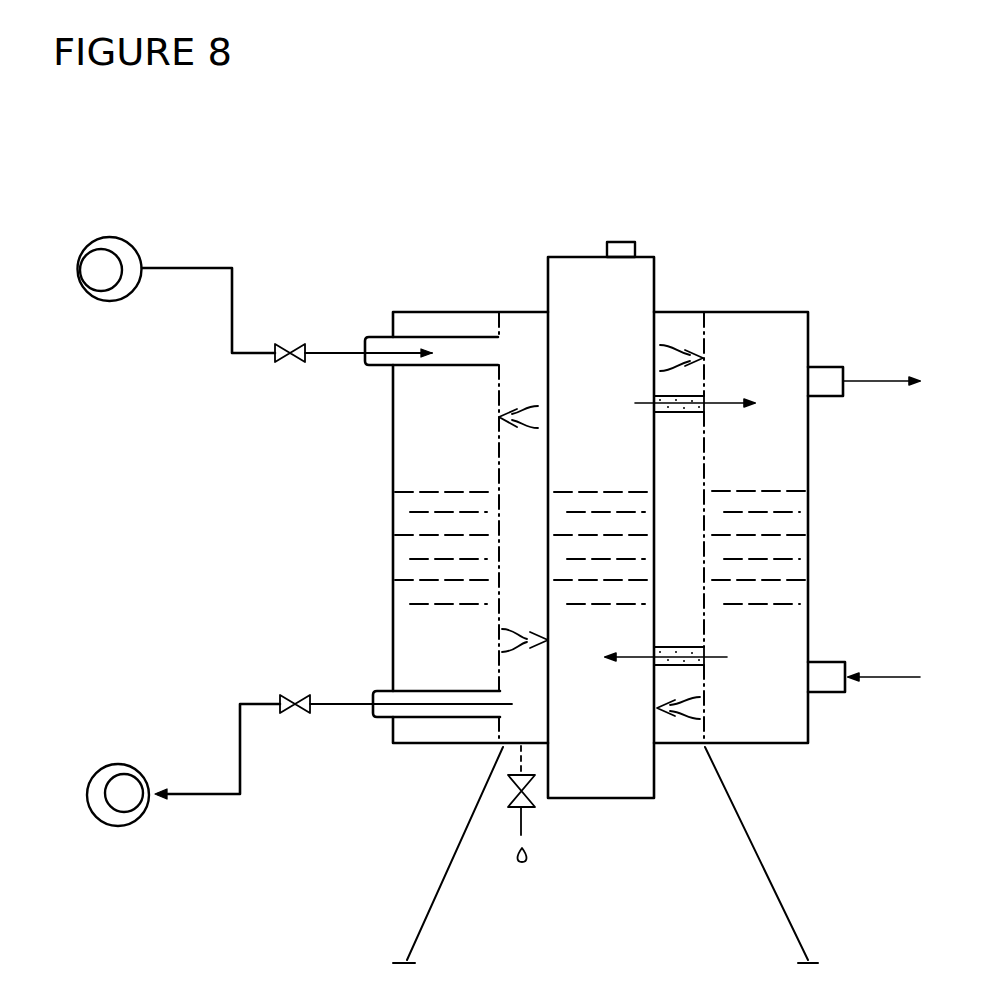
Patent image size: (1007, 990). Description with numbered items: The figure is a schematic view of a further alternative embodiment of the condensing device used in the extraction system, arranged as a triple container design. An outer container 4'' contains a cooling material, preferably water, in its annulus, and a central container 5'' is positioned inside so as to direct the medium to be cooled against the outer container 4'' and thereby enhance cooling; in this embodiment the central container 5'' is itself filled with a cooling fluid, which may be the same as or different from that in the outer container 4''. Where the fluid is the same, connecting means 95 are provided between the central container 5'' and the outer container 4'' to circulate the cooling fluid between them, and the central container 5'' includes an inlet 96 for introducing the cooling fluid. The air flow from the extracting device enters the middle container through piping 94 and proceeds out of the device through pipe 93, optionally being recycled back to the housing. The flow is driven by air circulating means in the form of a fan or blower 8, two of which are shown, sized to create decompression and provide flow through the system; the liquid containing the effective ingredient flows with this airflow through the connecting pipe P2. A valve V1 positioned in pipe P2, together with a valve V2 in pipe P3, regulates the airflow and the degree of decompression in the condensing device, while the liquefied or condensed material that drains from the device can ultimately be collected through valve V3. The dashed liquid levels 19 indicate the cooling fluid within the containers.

The fan or blower 8 is at (128, 248).
The liquid 19 is at (536, 507).
The outer container 4'' is at (580, 527).
The central container 5'' is at (581, 527).
The pipe 93 is at (430, 680).
The piping 94 is at (440, 372).
The connecting means 95 is at (680, 416).
The inlet 96 is at (612, 240).
The pipe P2 is at (168, 275).
The pipe P3 is at (208, 790).
The valve V1 is at (285, 366).
The valve V2 is at (308, 693).
The valve V3 is at (530, 812).